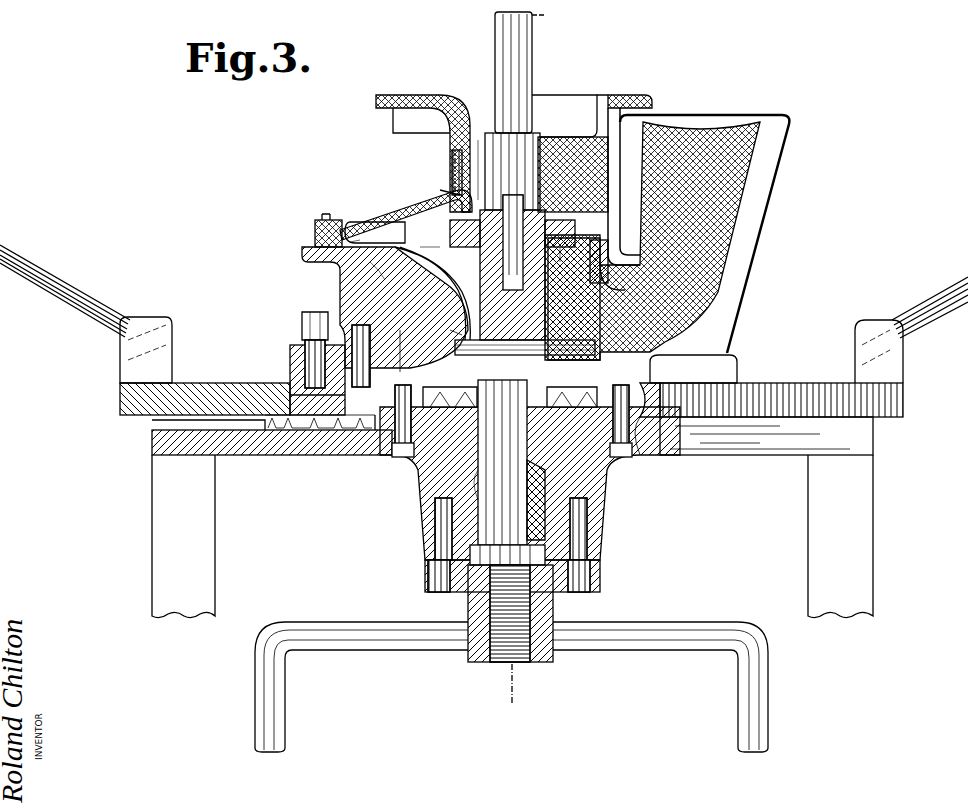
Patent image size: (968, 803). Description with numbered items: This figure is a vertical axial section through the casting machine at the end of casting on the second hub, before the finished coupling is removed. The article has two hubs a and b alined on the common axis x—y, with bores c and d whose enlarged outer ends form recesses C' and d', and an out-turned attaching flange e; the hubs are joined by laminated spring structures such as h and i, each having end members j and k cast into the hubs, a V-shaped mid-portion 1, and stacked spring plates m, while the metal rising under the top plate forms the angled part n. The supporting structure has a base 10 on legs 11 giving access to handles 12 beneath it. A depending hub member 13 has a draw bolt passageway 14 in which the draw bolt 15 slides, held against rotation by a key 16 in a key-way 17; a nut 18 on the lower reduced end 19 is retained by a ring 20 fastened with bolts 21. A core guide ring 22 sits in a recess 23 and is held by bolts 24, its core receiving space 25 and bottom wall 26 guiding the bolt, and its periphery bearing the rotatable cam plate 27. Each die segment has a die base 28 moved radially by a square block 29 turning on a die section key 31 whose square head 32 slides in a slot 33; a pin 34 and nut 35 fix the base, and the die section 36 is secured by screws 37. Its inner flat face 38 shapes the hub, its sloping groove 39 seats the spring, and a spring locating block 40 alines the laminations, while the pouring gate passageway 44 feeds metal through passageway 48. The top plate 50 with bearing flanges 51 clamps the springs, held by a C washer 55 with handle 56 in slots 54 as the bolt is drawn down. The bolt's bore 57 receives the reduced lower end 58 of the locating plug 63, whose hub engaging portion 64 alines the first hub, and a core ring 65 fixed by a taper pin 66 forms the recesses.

The V-shaped mid-portion 1 is at (360, 228).
The base 10 is at (740, 440).
The legs 11 is at (215, 498).
The handles 12 is at (285, 684).
The hub member 13 is at (600, 530).
The draw bolt passageway 14 is at (447, 550).
The draw bolt 15 is at (480, 482).
The key 16 is at (545, 485).
The key-way 17 is at (560, 552).
The nut 18 is at (470, 606).
The lower reduced end 19 is at (520, 600).
The ring 20 is at (428, 584).
The bolts 21 is at (580, 590).
The core guide ring 22 is at (650, 372).
The recess 23 is at (648, 456).
The bolts 24 is at (403, 457).
The core receiving space 25 is at (582, 408).
The bottom wall 26 is at (450, 396).
The cam plate 27 is at (120, 400).
The die base 28 is at (300, 365).
The square block 29 is at (300, 390).
The die section key 31 is at (300, 352).
The square head 32 is at (302, 430).
The slot 33 is at (162, 424).
The pin 34 is at (290, 370).
The nut 35 is at (305, 335).
The die section 36 is at (302, 256).
The screw 37 is at (354, 326).
The inner flat face 38 is at (455, 298).
The sloping groove 39 is at (373, 269).
The spring locating block 40 is at (316, 228).
The pouring gate passageway 44 is at (700, 122).
The passageway 48 is at (680, 302).
The top plate 50 is at (590, 248).
The bearing flanges 51 is at (376, 233).
The slots 54 is at (548, 238).
The C washer 55 is at (478, 232).
The handle 56 is at (396, 224).
The pin receiving bore 57 is at (512, 267).
The reduced lower end 58 is at (500, 196).
The locating plug 63 is at (520, 70).
The hub engaging portion 64 is at (538, 140).
The core ring 65 is at (507, 472).
The taper pin 66 is at (525, 372).
The hub member a is at (452, 150).
The hub member b is at (604, 280).
The bore c is at (478, 142).
The bore d is at (571, 239).
The recess d' is at (454, 441).
The attaching flange e is at (392, 95).
The recess C' is at (564, 105).
The spring structure h is at (400, 332).
The spring structure i is at (396, 186).
The end member j is at (452, 170).
The end member k is at (452, 332).
The spring plates m is at (440, 184).
The line n is at (436, 240).
The axis of reference x is at (545, 11).
The axis of reference y is at (518, 685).